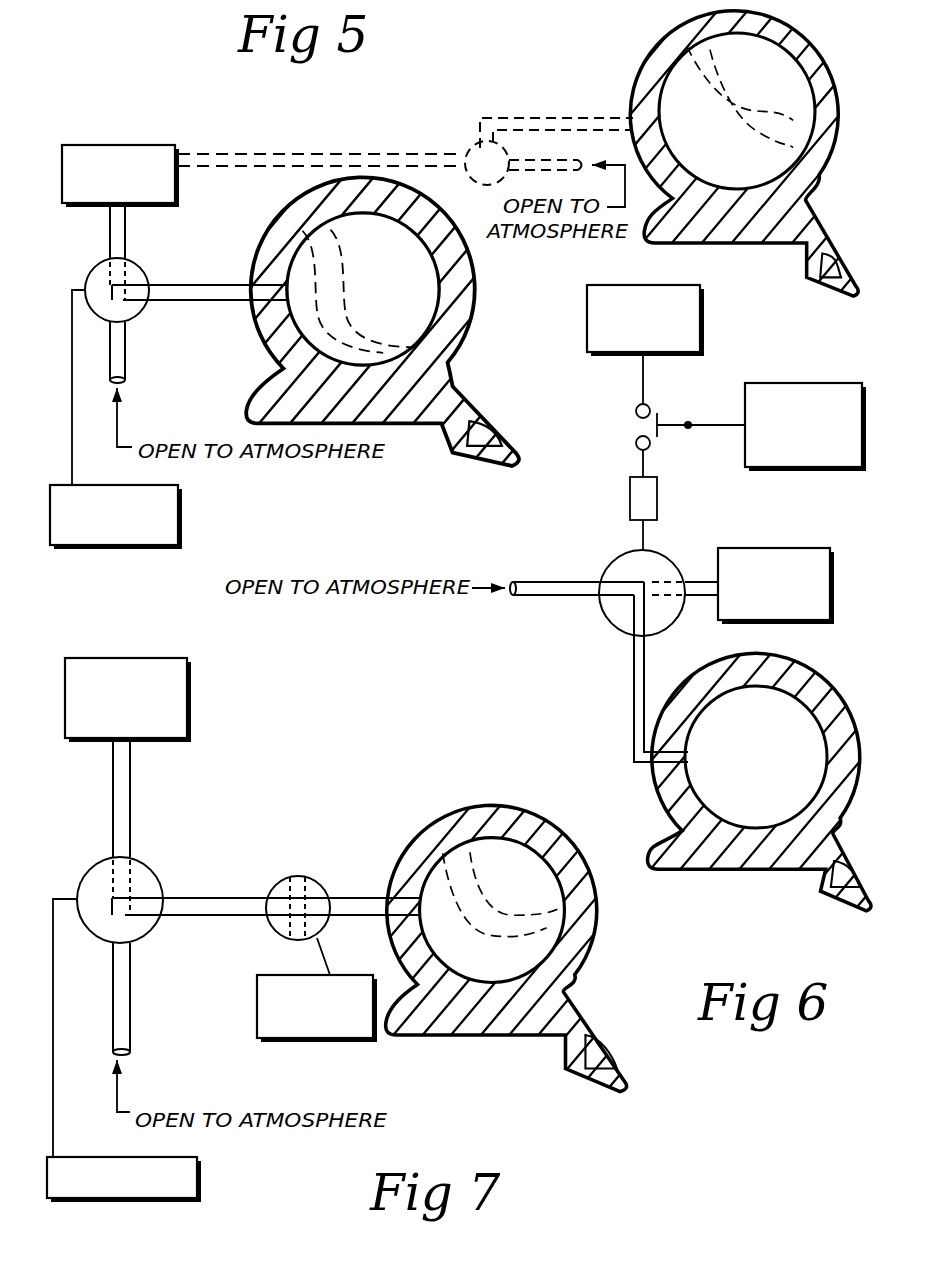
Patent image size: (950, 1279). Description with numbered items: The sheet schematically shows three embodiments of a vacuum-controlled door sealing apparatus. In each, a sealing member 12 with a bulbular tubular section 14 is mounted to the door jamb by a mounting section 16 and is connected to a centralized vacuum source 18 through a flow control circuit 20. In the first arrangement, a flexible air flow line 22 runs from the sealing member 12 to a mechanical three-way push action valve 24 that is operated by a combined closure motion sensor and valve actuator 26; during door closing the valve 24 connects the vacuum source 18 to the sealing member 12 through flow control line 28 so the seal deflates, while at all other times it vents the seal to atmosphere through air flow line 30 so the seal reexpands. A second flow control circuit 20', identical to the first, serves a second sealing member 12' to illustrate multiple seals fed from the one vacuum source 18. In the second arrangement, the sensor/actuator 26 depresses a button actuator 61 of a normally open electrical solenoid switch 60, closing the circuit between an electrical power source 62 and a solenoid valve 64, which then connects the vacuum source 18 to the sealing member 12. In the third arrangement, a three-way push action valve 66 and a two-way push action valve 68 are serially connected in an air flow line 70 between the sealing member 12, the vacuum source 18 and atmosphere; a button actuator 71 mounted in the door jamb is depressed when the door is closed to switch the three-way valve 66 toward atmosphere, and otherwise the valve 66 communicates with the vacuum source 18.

In FIG. 5, the sealing member 12 is at (395, 316).
In FIG. 6, the sealing member 12 is at (721, 780).
In FIG. 7, the sealing member 12 is at (521, 934).
In FIG. 5, the second sealing member 12' is at (711, 212).
In FIG. 5, the tubular section 14 is at (424, 205).
In FIG. 6, the tubular section 14 is at (760, 655).
In FIG. 7, the tubular section 14 is at (579, 933).
In FIG. 5, the mounting section 16 is at (488, 412).
In FIG. 5, the vacuum source 18 is at (140, 143).
In FIG. 6, the vacuum source 18 is at (774, 548).
In FIG. 7, the vacuum source 18 is at (189, 691).
In FIG. 5, the flow control circuit 20 is at (174, 247).
In FIG. 6, the flow control circuit 20 is at (597, 656).
In FIG. 7, the flow control circuit 20 is at (178, 896).
In FIG. 5, the second flow control circuit 20' is at (405, 144).
In FIG. 5, the air flow line 22 is at (215, 303).
In FIG. 5, the three-way push action valve 24 is at (100, 264).
In FIG. 5, the closure motion sensor and valve actuator 26 is at (179, 513).
In FIG. 6, the closure motion sensor and valve actuator 26 is at (788, 383).
In FIG. 7, the closure motion sensor and valve actuator 26 is at (315, 1040).
In FIG. 5, the flow control line 28 is at (127, 232).
In FIG. 5, the air flow line 30 is at (126, 366).
In FIG. 6, the electrical solenoid switch 60 is at (634, 428).
In FIG. 6, the button actuator 61 is at (678, 418).
In FIG. 6, the electrical power source 62 is at (703, 320).
In FIG. 6, the solenoid valve 64 is at (649, 538).
In FIG. 7, the three-way push action valve 66 is at (154, 870).
In FIG. 7, the two-way push action valve 68 is at (309, 878).
In FIG. 7, the air flow line 70 is at (207, 918).
In FIG. 7, the button actuator 71 is at (199, 1177).